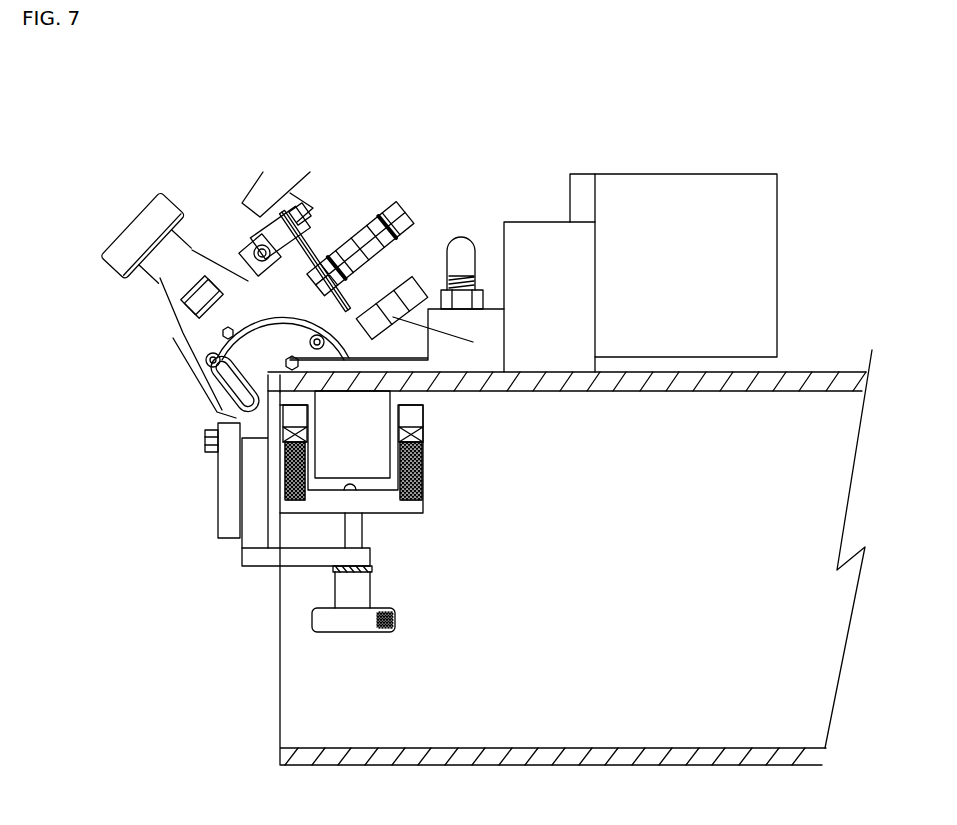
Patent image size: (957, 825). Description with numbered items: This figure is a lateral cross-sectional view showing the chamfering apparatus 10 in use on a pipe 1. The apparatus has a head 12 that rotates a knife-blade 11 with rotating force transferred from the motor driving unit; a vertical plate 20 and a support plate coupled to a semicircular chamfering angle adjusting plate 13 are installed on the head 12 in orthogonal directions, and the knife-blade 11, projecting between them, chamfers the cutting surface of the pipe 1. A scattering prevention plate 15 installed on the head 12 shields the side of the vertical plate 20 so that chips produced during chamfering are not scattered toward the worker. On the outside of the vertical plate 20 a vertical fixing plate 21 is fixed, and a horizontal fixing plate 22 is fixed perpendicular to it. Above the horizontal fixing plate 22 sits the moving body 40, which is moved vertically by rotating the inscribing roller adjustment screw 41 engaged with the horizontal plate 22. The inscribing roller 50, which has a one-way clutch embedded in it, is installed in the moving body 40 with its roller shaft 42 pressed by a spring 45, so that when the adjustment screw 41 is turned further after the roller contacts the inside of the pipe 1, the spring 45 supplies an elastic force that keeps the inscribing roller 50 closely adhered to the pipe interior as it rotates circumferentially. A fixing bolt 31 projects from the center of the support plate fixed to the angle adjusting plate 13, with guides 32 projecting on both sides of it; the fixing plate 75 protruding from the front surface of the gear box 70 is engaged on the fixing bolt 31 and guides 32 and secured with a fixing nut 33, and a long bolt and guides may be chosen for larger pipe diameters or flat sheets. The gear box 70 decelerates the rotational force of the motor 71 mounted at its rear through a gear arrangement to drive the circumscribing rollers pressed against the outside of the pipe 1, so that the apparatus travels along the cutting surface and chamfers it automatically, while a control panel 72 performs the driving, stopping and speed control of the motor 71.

The pipe 1 is at (703, 390).
The chamfering apparatus 10 is at (268, 275).
The knife-blade 11 is at (245, 385).
The head 12 is at (182, 282).
The semicircular chamfering angle adjusting plate 13 is at (235, 420).
The scattering prevention plate 15 is at (227, 407).
The vertical plate 20 is at (270, 477).
The vertical fixing plate 21 is at (250, 515).
The horizontal fixing plate 22 is at (267, 562).
The fixing bolt 31 is at (458, 265).
The guides 32 is at (460, 235).
The fixing nut 33 is at (427, 290).
The moving body 40 is at (377, 517).
The inscribing roller adjustment screw 41 is at (360, 620).
The roller shaft 42 is at (423, 435).
The spring 45 is at (423, 490).
The inscribing roller 50 is at (363, 400).
The gear box 70 is at (555, 250).
The motor 71 is at (727, 210).
The control panel 72 is at (585, 195).
The fixing plate 75 is at (355, 270).